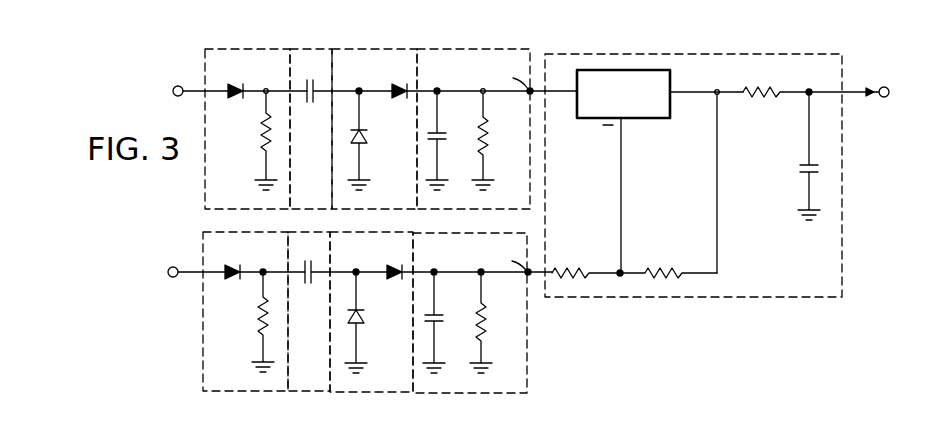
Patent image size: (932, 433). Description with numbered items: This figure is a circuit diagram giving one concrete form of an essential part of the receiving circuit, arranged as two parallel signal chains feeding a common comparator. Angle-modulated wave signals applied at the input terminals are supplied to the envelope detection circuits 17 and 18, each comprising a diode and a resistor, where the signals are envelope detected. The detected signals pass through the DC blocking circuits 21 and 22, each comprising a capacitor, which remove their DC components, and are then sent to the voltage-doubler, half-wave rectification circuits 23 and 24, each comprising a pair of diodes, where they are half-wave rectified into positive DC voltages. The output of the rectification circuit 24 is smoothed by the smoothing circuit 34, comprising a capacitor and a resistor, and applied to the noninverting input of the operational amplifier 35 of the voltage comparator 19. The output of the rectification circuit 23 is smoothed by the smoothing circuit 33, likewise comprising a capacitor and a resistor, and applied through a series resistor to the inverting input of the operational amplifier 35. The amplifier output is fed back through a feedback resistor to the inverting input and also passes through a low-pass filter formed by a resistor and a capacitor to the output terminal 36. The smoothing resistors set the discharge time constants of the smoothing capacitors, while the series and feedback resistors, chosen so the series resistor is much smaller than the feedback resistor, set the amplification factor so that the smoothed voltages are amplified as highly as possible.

The envelope detection circuit 17 is at (203, 355).
The envelope detection circuit 18 is at (213, 48).
The voltage comparator 19 is at (701, 203).
The DC blocking circuit 21 is at (303, 392).
The DC blocking circuit 22 is at (313, 48).
The voltage-doubler, half-wave rectification circuit 23 is at (370, 393).
The voltage-doubler, half-wave rectification circuit 24 is at (389, 48).
The smoothing circuit 33 is at (527, 352).
The smoothing circuit 34 is at (489, 48).
The operational amplifier 35 is at (645, 119).
The output terminal 36 is at (882, 86).